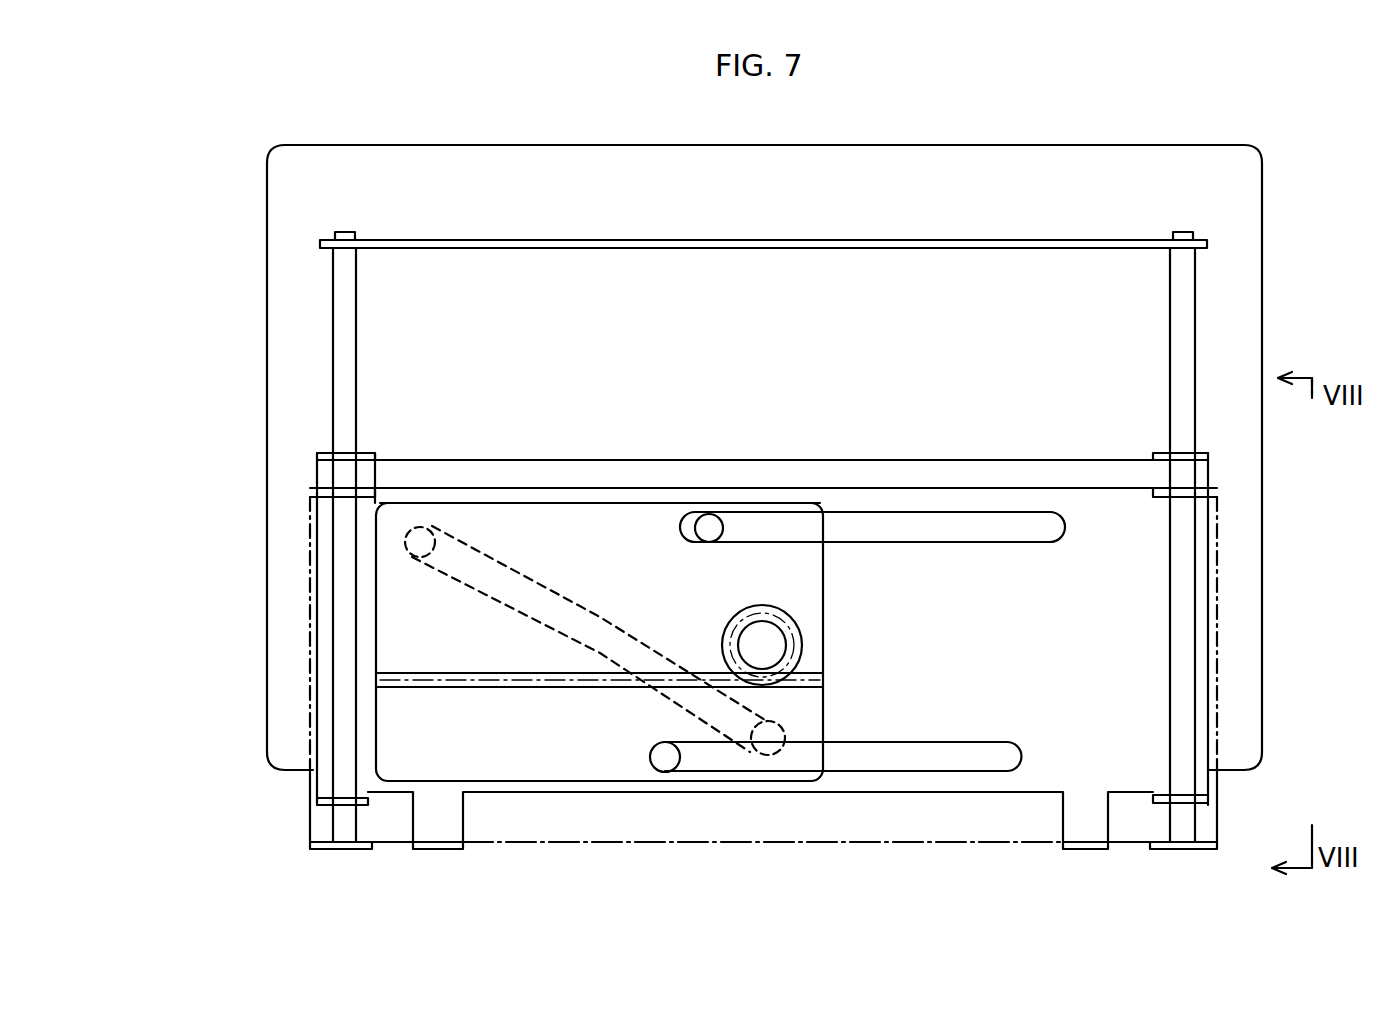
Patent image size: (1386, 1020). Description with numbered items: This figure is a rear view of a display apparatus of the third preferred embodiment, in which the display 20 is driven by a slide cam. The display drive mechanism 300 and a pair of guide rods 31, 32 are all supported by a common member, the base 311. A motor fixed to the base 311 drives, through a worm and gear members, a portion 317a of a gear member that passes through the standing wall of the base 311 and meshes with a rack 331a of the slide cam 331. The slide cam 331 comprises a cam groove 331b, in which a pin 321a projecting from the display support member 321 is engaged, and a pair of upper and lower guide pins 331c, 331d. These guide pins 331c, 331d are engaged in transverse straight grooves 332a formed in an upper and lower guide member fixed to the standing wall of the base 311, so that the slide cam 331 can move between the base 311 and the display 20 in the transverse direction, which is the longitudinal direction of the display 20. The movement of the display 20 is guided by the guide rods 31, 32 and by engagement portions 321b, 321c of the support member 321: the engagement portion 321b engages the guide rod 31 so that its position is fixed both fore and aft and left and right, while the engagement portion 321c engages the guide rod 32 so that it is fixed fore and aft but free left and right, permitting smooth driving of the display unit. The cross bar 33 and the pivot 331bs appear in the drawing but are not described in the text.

The display 20 is at (1263, 225).
The cross bar 33 is at (780, 249).
The guide rod 31 is at (357, 348).
The guide rod 32 is at (1177, 303).
The display support member 321 is at (497, 459).
The pin 321a is at (785, 721).
The engagement portion 321b is at (320, 455).
The engagement portion 321c is at (1208, 452).
The display drive mechanism 300 is at (690, 829).
The base 311 is at (872, 490).
The slide cam 331 is at (612, 500).
The rack 331a is at (458, 672).
The cam groove 331b is at (645, 648).
The pivot shaft 331bs is at (405, 542).
The guide pin 331c is at (709, 526).
The guide pin 331d is at (650, 758).
The portion of the gear member 317a is at (800, 623).
The transverse straight groove 332a is at (975, 742).